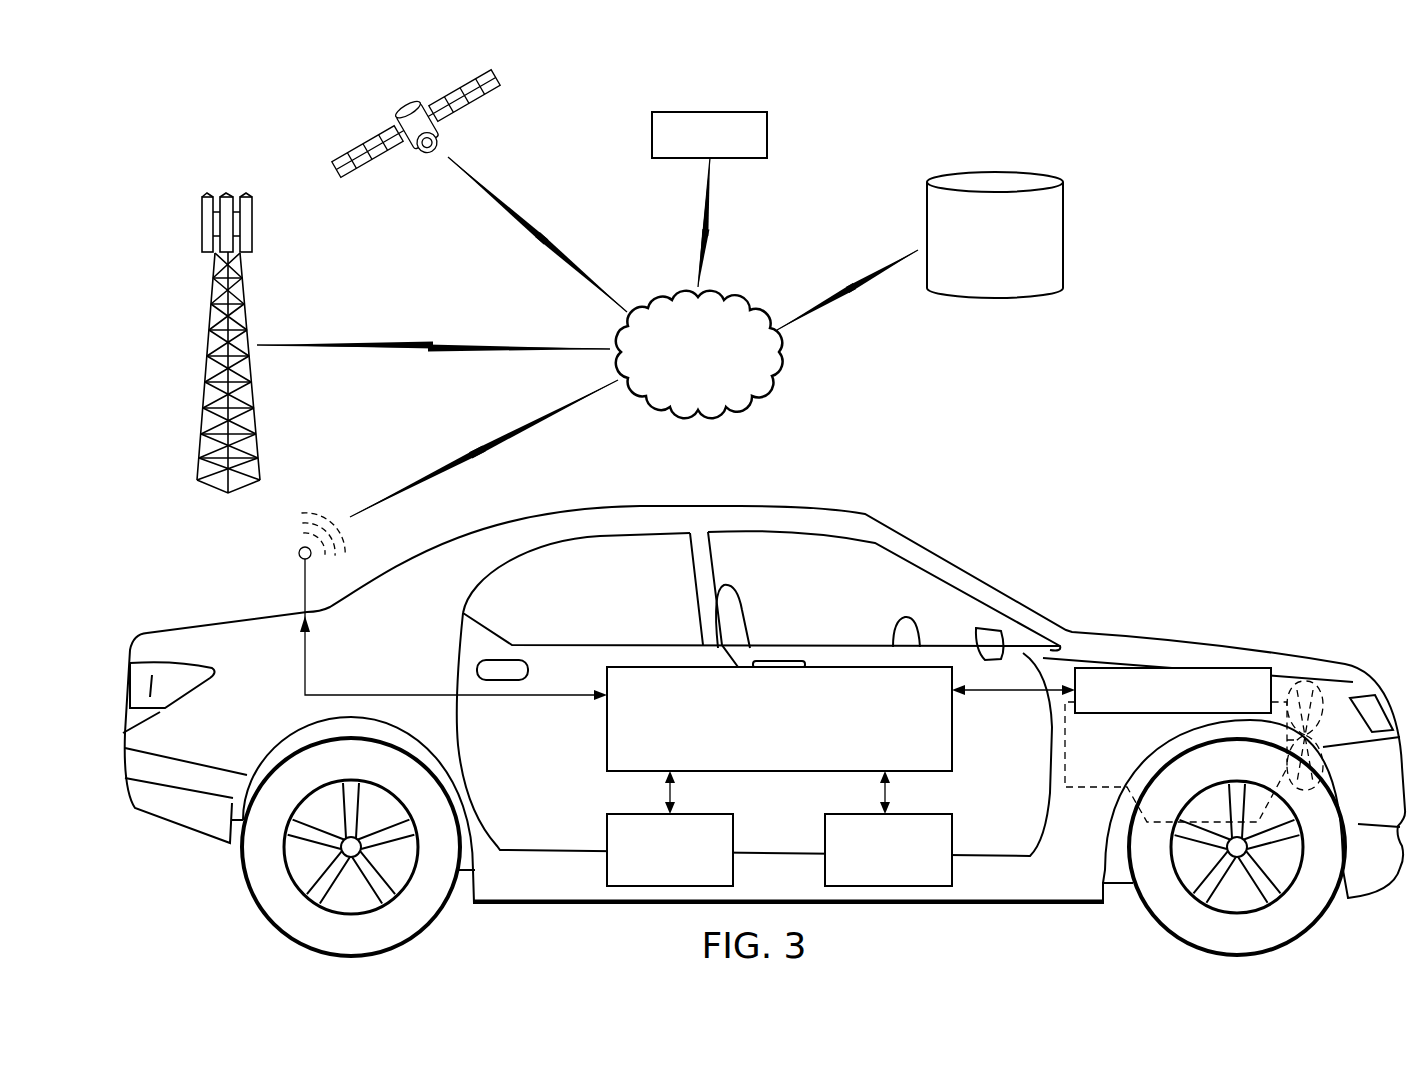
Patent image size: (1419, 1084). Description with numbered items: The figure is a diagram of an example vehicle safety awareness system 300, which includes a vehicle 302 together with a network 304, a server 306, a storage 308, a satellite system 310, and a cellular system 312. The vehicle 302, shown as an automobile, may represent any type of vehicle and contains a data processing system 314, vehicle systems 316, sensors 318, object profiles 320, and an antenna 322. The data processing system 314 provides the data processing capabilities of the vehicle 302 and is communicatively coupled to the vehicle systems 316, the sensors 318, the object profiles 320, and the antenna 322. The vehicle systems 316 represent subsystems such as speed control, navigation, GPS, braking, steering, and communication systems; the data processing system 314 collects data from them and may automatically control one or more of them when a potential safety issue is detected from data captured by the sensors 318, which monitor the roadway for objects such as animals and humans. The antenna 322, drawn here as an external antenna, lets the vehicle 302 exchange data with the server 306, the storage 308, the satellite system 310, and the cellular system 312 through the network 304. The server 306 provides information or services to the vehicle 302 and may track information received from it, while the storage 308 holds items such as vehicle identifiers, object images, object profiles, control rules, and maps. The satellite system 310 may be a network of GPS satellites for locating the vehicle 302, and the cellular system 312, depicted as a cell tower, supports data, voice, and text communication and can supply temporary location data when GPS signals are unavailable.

The vehicle safety awareness system 300 is at (1196, 197).
The vehicle 302 is at (974, 551).
The network 304 is at (735, 297).
The server 306 is at (718, 111).
The storage 308 is at (976, 276).
The satellite system 310 is at (399, 122).
The cellular system 312 is at (202, 222).
The data processing system 314 is at (760, 753).
The vehicle systems 316 is at (825, 858).
The sensors 318 is at (1173, 668).
The object profiles 320 is at (733, 838).
The antenna 322 is at (298, 554).